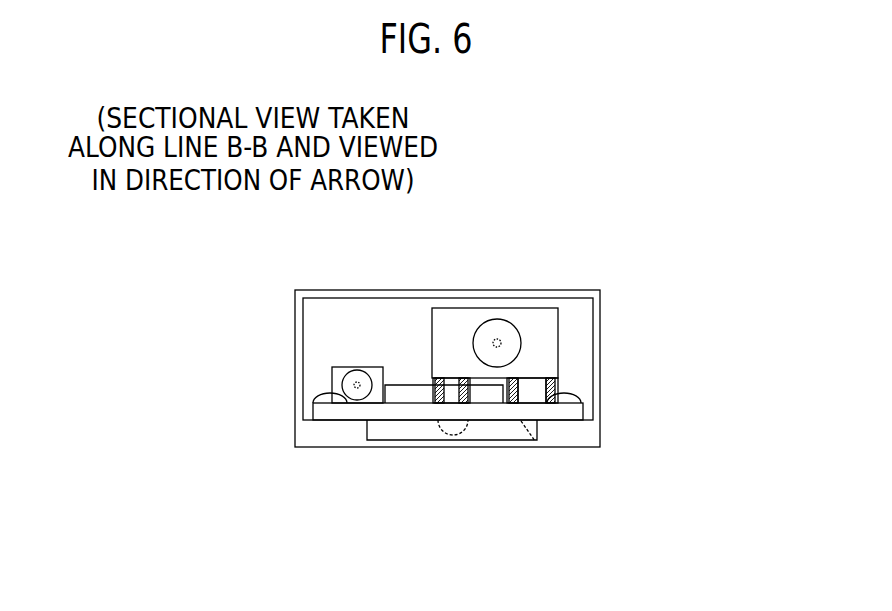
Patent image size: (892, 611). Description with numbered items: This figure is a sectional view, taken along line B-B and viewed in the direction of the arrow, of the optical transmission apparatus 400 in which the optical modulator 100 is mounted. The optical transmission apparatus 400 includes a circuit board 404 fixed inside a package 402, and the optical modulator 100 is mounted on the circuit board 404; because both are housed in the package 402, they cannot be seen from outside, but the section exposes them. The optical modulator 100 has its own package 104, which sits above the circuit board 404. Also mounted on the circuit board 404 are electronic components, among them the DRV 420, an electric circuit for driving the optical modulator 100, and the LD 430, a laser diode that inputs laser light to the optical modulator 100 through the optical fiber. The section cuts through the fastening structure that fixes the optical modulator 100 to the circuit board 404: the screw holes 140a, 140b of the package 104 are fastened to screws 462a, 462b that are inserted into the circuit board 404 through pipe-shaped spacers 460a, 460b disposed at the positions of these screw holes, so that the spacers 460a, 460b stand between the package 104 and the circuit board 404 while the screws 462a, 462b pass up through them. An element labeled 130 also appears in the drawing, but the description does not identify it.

The optical transmission apparatus 400 is at (233, 98).
The package 402 is at (447, 335).
The circuit board 404 is at (432, 462).
The DRV (Driver) 420 is at (444, 307).
The LD (Laser Diode) 430 is at (350, 309).
The optical modulator 100 is at (567, 323).
The package 104 is at (587, 334).
The pipe-shaped spacer 460a is at (428, 453).
The pipe-shaped spacer 460b is at (602, 468).
The screw 462a is at (465, 441).
The screw 462b is at (549, 456).
The magnet 130 is at (524, 483).
The screw hole 140a is at (441, 382).
The screw hole 140b is at (596, 405).